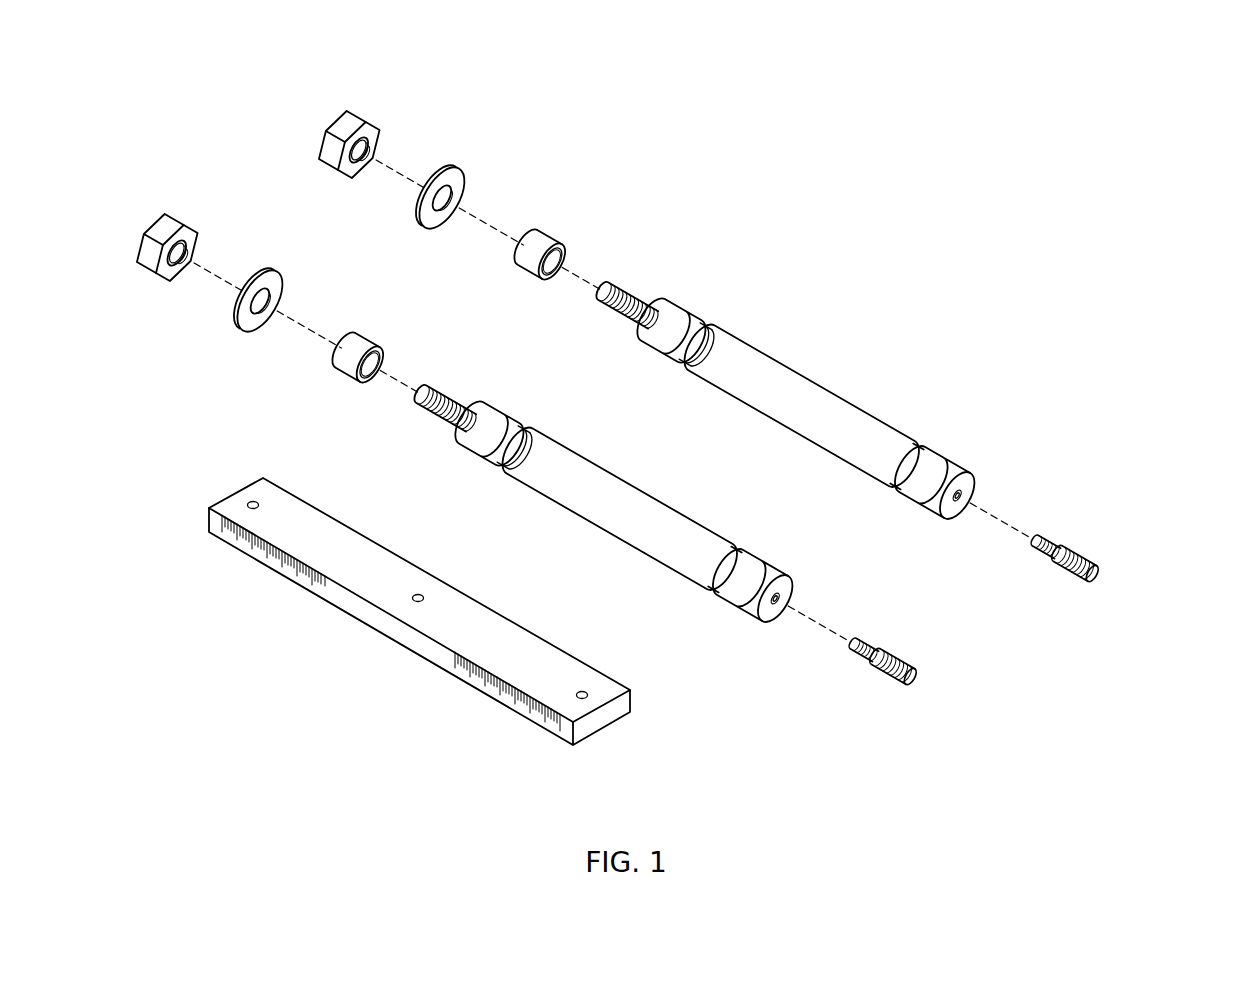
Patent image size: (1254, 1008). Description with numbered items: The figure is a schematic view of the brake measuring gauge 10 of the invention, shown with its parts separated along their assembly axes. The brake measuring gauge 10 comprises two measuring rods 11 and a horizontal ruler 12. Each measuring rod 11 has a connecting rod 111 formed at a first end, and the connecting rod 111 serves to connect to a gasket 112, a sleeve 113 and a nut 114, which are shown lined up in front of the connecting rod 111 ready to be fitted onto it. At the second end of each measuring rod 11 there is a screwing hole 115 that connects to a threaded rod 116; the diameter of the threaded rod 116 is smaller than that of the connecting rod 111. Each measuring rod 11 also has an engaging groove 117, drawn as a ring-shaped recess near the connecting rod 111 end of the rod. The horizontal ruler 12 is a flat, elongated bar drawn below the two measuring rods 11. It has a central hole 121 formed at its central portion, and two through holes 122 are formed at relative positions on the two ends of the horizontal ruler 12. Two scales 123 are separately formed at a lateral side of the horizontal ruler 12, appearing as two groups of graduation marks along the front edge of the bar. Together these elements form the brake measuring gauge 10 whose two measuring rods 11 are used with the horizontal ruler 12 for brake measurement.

The brake measuring gauge 10 is at (717, 325).
The measuring rod 11 is at (853, 432).
The connecting rod 111 is at (633, 293).
The gasket 112 is at (453, 177).
The sleeve 113 is at (537, 236).
The nut 114 is at (333, 141).
The screwing hole 115 is at (963, 498).
The threaded rod 116 is at (1068, 545).
The engaging groove 117 is at (708, 323).
The horizontal ruler 12 is at (385, 573).
The central hole 121 is at (420, 594).
The through hole 122 is at (582, 690).
The scale 123 is at (292, 568).